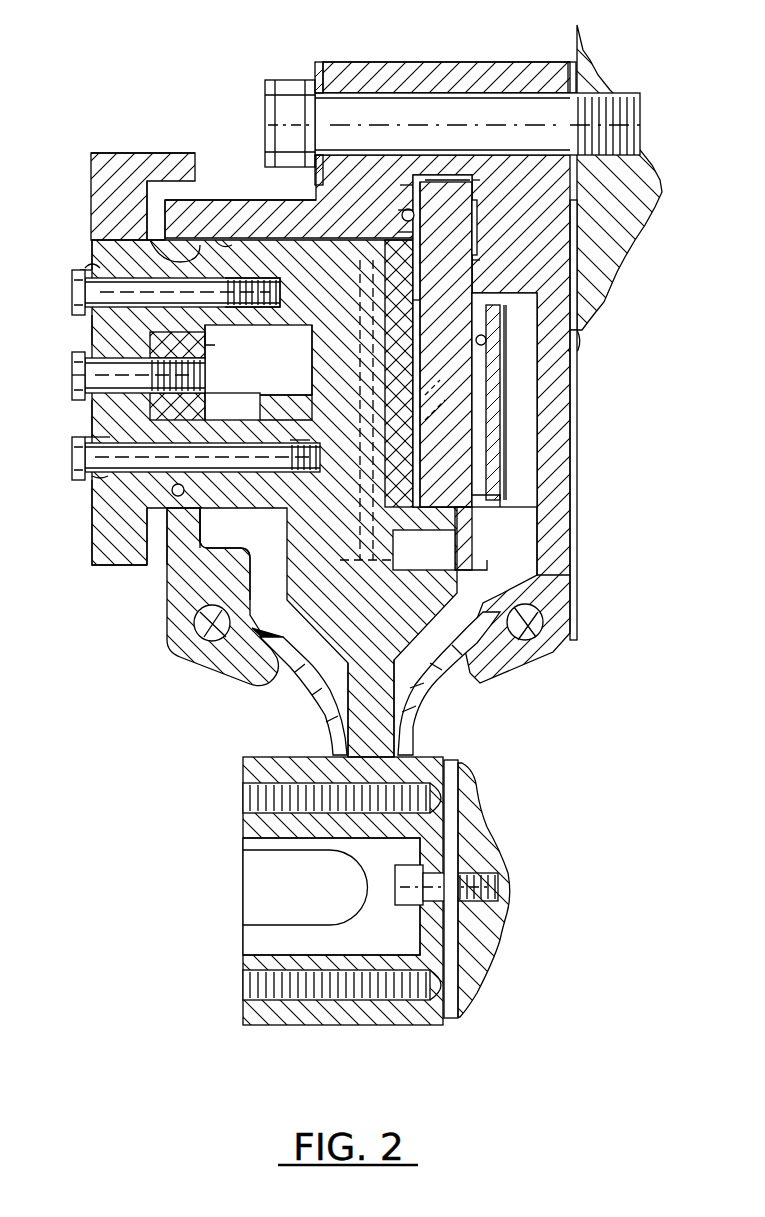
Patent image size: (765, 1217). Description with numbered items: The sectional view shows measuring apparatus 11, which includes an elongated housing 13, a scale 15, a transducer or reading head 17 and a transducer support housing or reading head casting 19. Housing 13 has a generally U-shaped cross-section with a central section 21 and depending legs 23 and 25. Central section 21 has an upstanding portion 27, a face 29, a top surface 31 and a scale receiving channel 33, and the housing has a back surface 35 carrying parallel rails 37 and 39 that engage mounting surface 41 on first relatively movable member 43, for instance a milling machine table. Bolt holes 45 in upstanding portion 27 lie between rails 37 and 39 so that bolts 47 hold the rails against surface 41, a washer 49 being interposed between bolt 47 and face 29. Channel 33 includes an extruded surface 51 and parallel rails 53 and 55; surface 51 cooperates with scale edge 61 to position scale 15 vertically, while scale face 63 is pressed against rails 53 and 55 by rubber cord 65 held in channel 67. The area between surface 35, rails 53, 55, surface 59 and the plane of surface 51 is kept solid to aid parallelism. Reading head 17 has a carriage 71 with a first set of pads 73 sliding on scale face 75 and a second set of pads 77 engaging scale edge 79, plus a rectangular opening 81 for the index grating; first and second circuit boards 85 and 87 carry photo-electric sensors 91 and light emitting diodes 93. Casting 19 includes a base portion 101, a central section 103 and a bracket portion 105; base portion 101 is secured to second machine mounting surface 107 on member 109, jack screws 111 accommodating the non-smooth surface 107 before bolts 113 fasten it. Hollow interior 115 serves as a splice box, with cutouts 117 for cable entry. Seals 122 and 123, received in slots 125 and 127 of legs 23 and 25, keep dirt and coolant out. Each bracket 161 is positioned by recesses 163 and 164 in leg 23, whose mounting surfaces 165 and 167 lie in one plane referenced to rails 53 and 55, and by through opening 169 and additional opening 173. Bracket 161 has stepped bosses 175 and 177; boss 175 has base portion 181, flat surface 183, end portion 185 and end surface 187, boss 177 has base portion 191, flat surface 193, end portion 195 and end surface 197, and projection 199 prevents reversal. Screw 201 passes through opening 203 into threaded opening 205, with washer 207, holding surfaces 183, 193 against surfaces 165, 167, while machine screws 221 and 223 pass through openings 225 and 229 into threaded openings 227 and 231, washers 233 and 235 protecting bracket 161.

The measuring apparatus 11 is at (160, 85).
The elongated housing 13 is at (215, 198).
The scale 15 is at (426, 382).
The transducer or reading head 17 is at (470, 570).
The transducer support housing or reading head casting 19 is at (305, 640).
The central section 21 is at (283, 225).
The depending leg 23 is at (175, 610).
The depending leg 25 is at (565, 435).
The upstanding portion 27 is at (430, 62).
The face 29 is at (318, 62).
The top surface 31 is at (385, 62).
The scale receiving channel 33 is at (398, 213).
The back surface 35 is at (577, 400).
The rail 37 is at (570, 70).
The rail 39 is at (578, 210).
The mounting surface 41 is at (578, 343).
The first relatively movable member 43 is at (612, 262).
The bolt holes 45 is at (472, 88).
The bolt 47 is at (392, 138).
The washer 49 is at (310, 72).
The extruded surface 51 is at (400, 190).
The extruded parallel rail 53 is at (480, 190).
The extruded parallel rail 55 is at (478, 280).
The surface 59 is at (510, 297).
The scale edge 61 is at (450, 182).
The scale face 63 is at (478, 228).
The rubber cord 65 is at (420, 240).
The channel 67 is at (398, 235).
The carriage 71 is at (470, 530).
The first set of pads 73 is at (385, 252).
The scale face 75 is at (425, 305).
The second set of pads 77 is at (440, 535).
The scale edge 79 is at (470, 500).
The rectangular opening 81 is at (420, 405).
The first circuit board 85 is at (365, 300).
The second circuit board 87 is at (502, 415).
The photo-electric sensor 91 is at (312, 385).
The light emitting diode 93 is at (500, 350).
The base portion 101 is at (365, 1025).
The central section 103 is at (356, 720).
The bracket portion 105 is at (306, 555).
The second machine mounting surface 107 is at (455, 764).
The member 109 is at (490, 848).
The jack screws 111 is at (465, 795).
The bolts 113 is at (405, 910).
The hollow interior 115 is at (350, 860).
The cutouts 117 is at (268, 932).
The seal 122 is at (320, 725).
The seal 123 is at (435, 705).
The slot 125 is at (205, 660).
The slot 127 is at (545, 620).
The bracket 161 is at (92, 555).
The recess 163 is at (175, 498).
The recess 164 is at (165, 255).
The mounting surface 165 is at (195, 510).
The mounting surface 167 is at (170, 338).
The through opening 169 is at (208, 424).
The additional opening 173 is at (222, 330).
The stepped boss 175 is at (92, 420).
The stepped boss 177 is at (92, 240).
The base portion 181 is at (152, 570).
The flat surface 183 is at (165, 410).
The end portion 185 is at (240, 554).
The end surface 187 is at (305, 430).
The base portion 191 is at (150, 240).
The flat surface 193 is at (180, 290).
The end portion 195 is at (225, 242).
The end surface 197 is at (258, 360).
The projection 199 is at (165, 153).
The screw 201 is at (75, 388).
The opening 203 is at (95, 345).
The threaded opening 205 is at (200, 378).
The washer 207 is at (78, 370).
The machine screw 221 is at (80, 455).
The machine screw 223 is at (75, 300).
The opening 225 is at (92, 490).
The threaded opening 227 is at (300, 455).
The opening 229 is at (92, 265).
The threaded opening 231 is at (262, 278).
The washer 233 is at (92, 440).
The washer 235 is at (90, 270).